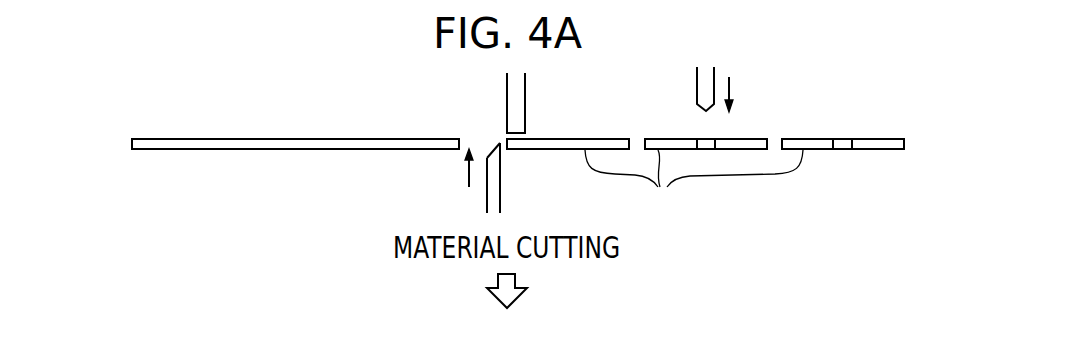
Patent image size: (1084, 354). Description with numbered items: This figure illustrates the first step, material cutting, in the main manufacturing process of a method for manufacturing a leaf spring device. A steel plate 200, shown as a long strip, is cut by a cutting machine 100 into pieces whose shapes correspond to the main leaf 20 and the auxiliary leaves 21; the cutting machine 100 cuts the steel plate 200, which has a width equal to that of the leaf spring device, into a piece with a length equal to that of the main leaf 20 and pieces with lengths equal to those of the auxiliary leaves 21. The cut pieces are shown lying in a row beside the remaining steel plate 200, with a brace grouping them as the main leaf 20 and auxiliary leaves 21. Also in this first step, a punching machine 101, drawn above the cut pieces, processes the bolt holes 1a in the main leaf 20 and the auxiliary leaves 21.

The steel plate 200 is at (255, 138).
The cutting machine 100 is at (500, 183).
The punching machine 101 is at (697, 92).
The main leaf 20 is at (705, 182).
The auxiliary leaves 21 is at (774, 182).
The bolt holes 1a is at (722, 139).